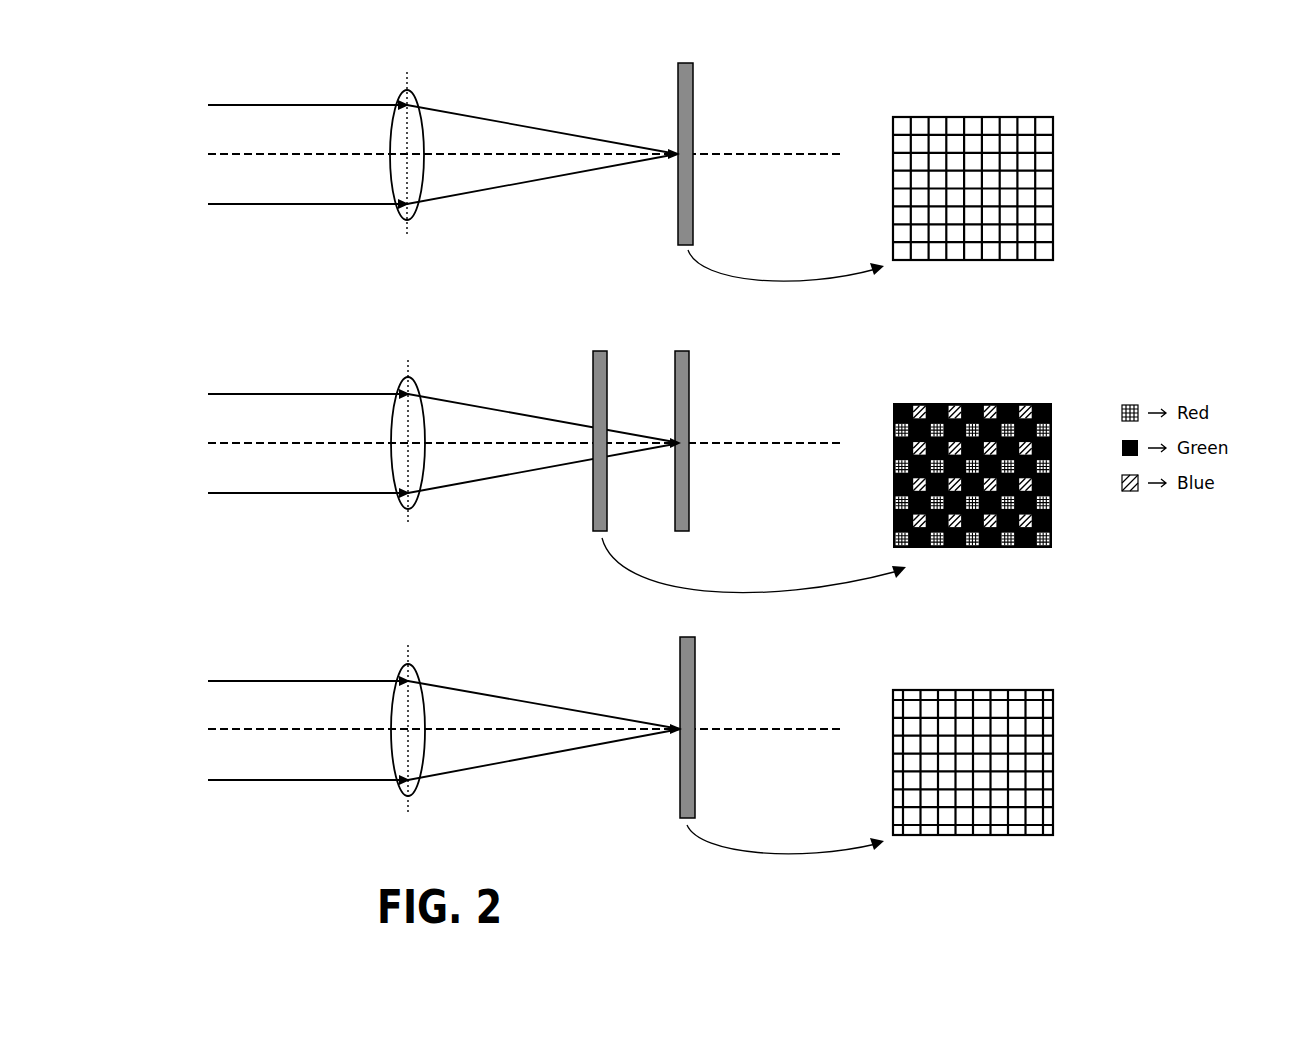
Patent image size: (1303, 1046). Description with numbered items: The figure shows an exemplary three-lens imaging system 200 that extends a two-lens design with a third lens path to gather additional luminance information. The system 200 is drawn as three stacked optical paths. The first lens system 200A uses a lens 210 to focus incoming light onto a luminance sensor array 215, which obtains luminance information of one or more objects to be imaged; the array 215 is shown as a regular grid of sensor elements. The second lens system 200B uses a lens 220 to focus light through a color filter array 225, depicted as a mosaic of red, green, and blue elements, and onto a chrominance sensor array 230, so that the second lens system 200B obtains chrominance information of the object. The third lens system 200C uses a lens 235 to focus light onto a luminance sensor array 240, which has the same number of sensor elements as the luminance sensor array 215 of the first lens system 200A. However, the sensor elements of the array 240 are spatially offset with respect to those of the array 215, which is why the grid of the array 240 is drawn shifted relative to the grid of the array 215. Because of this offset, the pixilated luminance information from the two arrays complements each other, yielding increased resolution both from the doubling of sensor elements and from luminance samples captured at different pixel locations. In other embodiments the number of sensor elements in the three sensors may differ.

The three-lens imaging system 200 is at (893, 57).
The first lens system 200A is at (297, 64).
The second lens system 200B is at (297, 326).
The third lens system 200C is at (292, 618).
The lens 210 is at (420, 100).
The luminance sensor array 215 is at (698, 82).
The lens 220 is at (420, 388).
The color filter array 225 is at (583, 370).
The chrominance sensor array 230 is at (700, 370).
The lens 235 is at (420, 676).
The luminance sensor array 240 is at (700, 657).